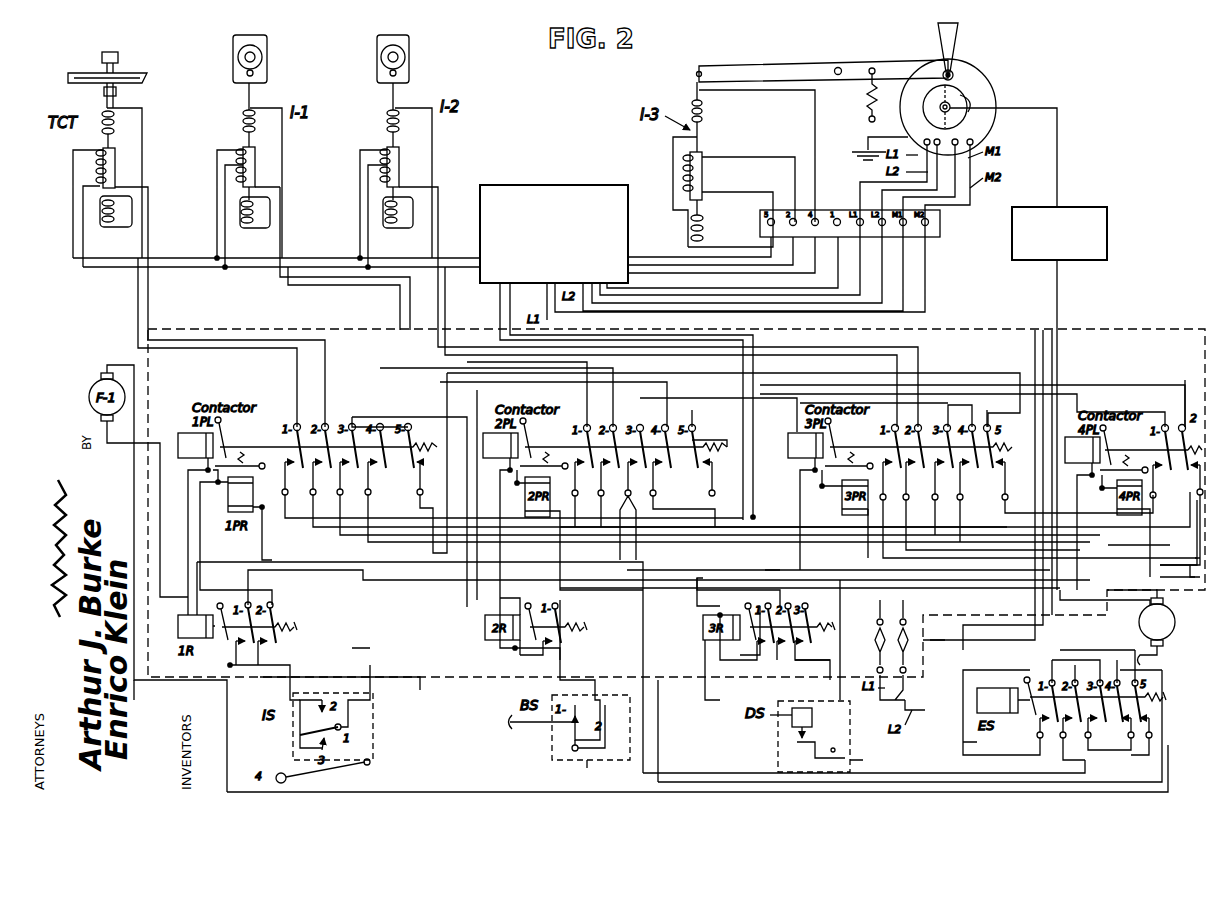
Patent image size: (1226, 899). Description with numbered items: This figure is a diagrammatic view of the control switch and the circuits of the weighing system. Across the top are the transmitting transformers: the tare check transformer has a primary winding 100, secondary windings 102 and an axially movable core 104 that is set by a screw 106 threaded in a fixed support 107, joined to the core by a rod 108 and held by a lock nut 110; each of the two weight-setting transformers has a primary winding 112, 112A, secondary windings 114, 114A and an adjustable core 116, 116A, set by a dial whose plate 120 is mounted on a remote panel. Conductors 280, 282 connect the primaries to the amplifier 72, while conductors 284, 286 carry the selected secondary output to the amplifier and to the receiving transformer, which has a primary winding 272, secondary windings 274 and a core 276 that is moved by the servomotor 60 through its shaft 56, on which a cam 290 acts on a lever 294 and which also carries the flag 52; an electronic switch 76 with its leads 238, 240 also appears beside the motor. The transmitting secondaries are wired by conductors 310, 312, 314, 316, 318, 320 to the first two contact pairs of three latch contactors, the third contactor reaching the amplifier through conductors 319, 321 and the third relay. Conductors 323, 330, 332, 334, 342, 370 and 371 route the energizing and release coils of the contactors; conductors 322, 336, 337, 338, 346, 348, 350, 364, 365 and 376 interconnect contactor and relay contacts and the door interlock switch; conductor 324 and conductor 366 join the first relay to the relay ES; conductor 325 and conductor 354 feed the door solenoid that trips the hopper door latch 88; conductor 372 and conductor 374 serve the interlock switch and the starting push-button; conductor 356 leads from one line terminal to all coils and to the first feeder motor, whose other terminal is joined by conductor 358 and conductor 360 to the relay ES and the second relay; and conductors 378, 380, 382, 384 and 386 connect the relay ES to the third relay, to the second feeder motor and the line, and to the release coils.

The flag 52 is at (958, 38).
The shaft 56 is at (945, 108).
The servomotor 60 is at (972, 80).
The amplifier 72 is at (556, 184).
The electronic switch 76 is at (1083, 208).
The hopper door retaining latch 88 is at (818, 745).
The primary winding 100 is at (115, 165).
The secondary windings 102 is at (114, 126).
The core or armature 104 is at (73, 158).
The screw 106 is at (116, 92).
The relatively fixed support 107 is at (147, 77).
The rod 108 is at (105, 97).
The lock nut 110 is at (120, 58).
The primary winding 112 is at (255, 160).
The primary winding 112A is at (399, 160).
The secondary windings 114 is at (243, 118).
The secondary windings 114A is at (387, 118).
The core or armature 116 is at (247, 175).
The core or armature 116A is at (399, 175).
The plate 120 is at (267, 60).
The electronic switch lead 238 is at (1050, 280).
The electronic switch lead 240 is at (1062, 297).
The primary winding 272 is at (702, 172).
The secondary windings 274 is at (704, 115).
The core or armature 276 is at (683, 162).
The conductor 280 is at (168, 254).
The conductor 282 is at (168, 268).
The conductor 284 is at (498, 305).
The conductor 286 is at (512, 292).
The cam 290 is at (972, 100).
The lever 294 is at (806, 65).
The conductor 310 is at (137, 295).
The conductor 312 is at (148, 308).
The conductor 314 is at (276, 278).
The conductor 316 is at (317, 280).
The conductor 318 is at (440, 250).
The conductor 319 is at (790, 592).
The conductor 320 is at (446, 278).
The conductor 321 is at (905, 575).
The conductor 322 is at (758, 527).
The conductor 323 is at (350, 550).
The conductor 324 is at (388, 360).
The conductor 325 is at (1163, 565).
The conductor 330 is at (486, 420).
The conductor 332 is at (310, 545).
The conductor 334 is at (797, 398).
The conductor 336 is at (670, 382).
The conductor 337 is at (360, 420).
The conductor 338 is at (650, 510).
The conductor 342 is at (1083, 403).
The conductor 346 is at (697, 414).
The conductor 348 is at (965, 548).
The conductor 350 is at (1145, 415).
The conductor 354 is at (915, 693).
The conductor 356 is at (1108, 535).
The conductor 358 is at (152, 405).
The conductor 360 is at (683, 780).
The conductor 364 is at (440, 378).
The conductor 365 is at (368, 570).
The conductor 366 is at (553, 662).
The conductor 370 is at (1004, 498).
The conductor 371 is at (262, 553).
The conductor 372 is at (280, 682).
The conductor 374 is at (1203, 522).
The conductor 376 is at (760, 660).
The conductor 378 is at (712, 560).
The conductor 380 is at (1138, 618).
The conductor 382 is at (1160, 655).
The conductor 384 is at (945, 525).
The conductor 386 is at (578, 570).